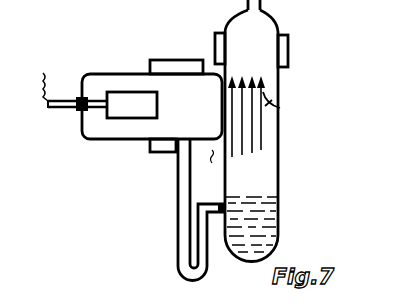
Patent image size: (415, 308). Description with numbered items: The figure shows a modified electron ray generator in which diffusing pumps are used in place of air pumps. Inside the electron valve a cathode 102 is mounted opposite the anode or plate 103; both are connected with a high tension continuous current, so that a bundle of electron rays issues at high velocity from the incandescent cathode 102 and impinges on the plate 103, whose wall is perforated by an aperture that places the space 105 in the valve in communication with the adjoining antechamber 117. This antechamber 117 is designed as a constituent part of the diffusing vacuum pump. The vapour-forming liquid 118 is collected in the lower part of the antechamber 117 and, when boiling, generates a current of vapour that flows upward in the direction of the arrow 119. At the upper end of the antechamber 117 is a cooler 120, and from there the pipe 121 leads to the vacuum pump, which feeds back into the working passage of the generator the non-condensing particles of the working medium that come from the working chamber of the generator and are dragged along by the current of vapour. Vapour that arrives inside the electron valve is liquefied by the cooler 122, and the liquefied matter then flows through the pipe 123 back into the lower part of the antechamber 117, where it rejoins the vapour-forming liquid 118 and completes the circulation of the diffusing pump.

The cathode 102 is at (120, 92).
The anode or plate 103 is at (223, 125).
The space in the valve 105 is at (81, 125).
The antechamber 117 is at (278, 150).
The vapour-forming liquid 118 is at (252, 240).
The arrow 119 is at (252, 155).
The cooler 120 is at (319, 34).
The pipe 121 is at (262, 5).
The cooler 122 is at (148, 152).
The pipe 123 is at (189, 192).